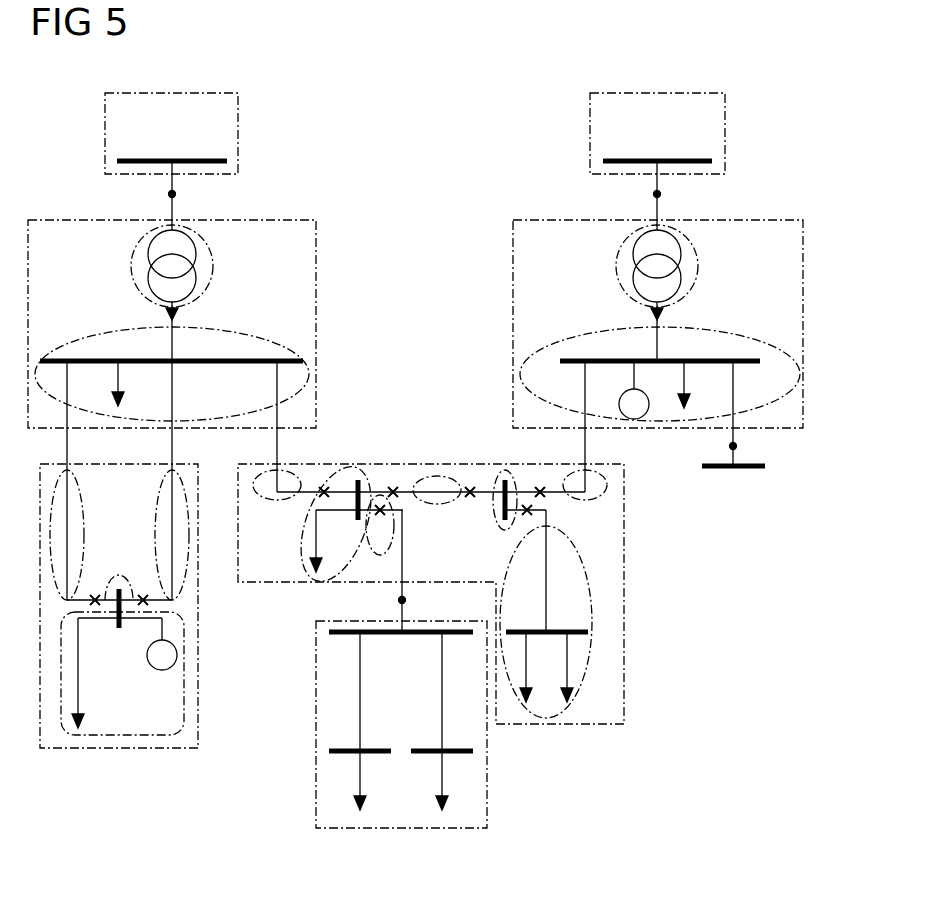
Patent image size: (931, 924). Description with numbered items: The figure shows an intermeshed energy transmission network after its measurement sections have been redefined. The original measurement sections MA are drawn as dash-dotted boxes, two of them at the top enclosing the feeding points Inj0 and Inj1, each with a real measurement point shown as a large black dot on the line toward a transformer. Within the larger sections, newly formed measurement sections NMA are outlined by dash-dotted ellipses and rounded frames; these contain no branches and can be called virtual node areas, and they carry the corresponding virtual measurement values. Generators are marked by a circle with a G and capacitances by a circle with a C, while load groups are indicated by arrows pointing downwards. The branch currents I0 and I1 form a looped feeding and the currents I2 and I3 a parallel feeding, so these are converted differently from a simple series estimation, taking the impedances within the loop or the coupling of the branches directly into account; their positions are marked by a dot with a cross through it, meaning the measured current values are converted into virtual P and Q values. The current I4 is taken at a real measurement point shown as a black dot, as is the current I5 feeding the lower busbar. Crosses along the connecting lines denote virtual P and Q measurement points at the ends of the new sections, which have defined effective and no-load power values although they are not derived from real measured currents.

The measurement section MA is at (238, 133).
The newly formed measurement section NMA is at (132, 263).
The injection 0 Inj0 is at (178, 181).
The injection 1 Inj1 is at (663, 181).
The current I0 is at (62, 441).
The current I1 is at (167, 441).
The current I2 is at (272, 441).
The current I3 is at (580, 441).
The current measurement 4 I4 is at (733, 413).
The current measurement 5 I5 is at (412, 571).
The generator G is at (162, 644).
The capacitance C is at (634, 390).